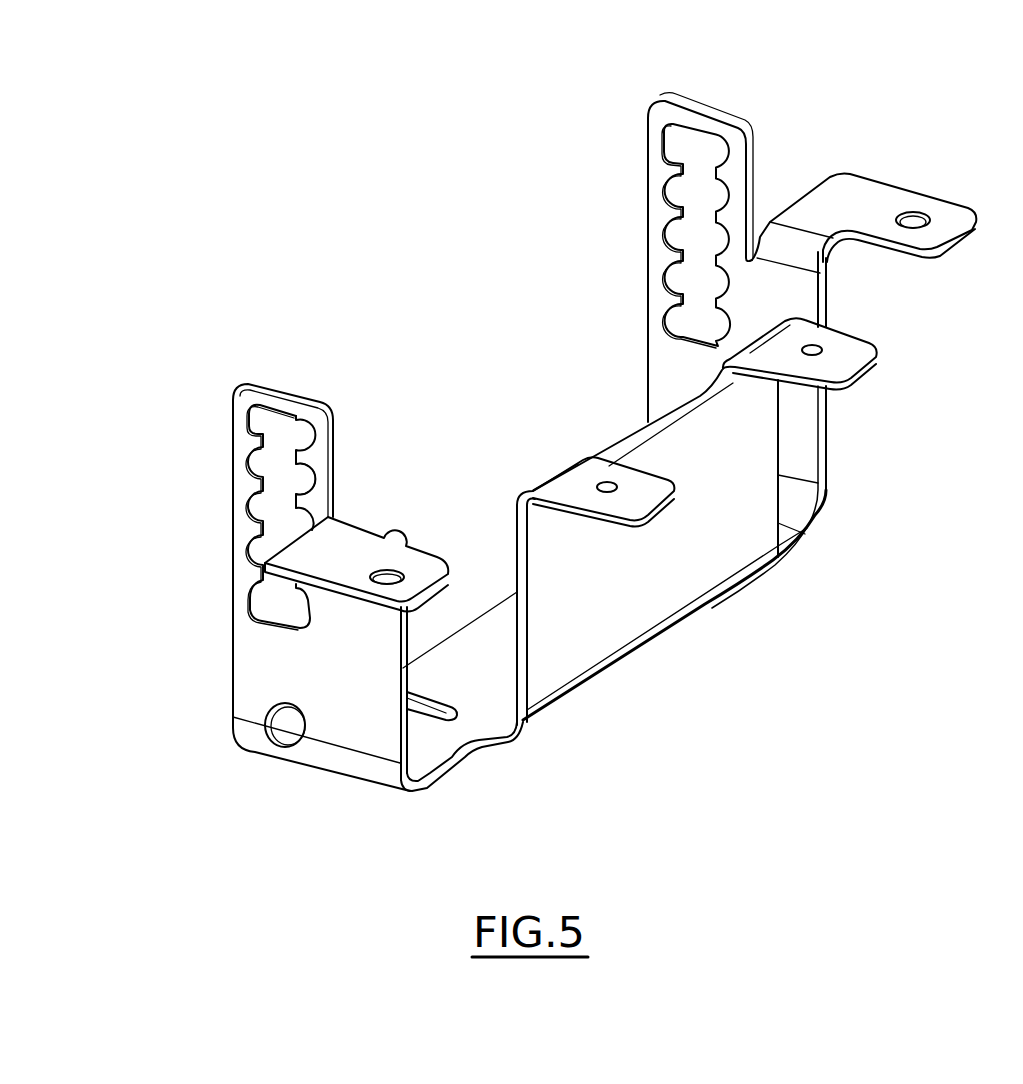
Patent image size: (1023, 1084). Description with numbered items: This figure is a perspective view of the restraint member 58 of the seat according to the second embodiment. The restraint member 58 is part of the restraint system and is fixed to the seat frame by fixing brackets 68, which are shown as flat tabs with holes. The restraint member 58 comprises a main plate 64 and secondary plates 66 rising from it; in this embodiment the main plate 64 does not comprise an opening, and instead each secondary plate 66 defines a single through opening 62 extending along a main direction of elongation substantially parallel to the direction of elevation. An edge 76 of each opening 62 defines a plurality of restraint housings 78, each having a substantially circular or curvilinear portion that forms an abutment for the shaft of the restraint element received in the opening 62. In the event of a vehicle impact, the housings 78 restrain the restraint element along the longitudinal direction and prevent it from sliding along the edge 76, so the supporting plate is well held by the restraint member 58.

The restraint member 58 is at (492, 327).
The through opening 62 is at (700, 145).
The main plate 64 is at (607, 640).
The secondary plate 66 is at (797, 420).
The fixing bracket 68 is at (899, 203).
The edge of the opening 76 is at (300, 437).
The restraint housing 78 is at (302, 470).